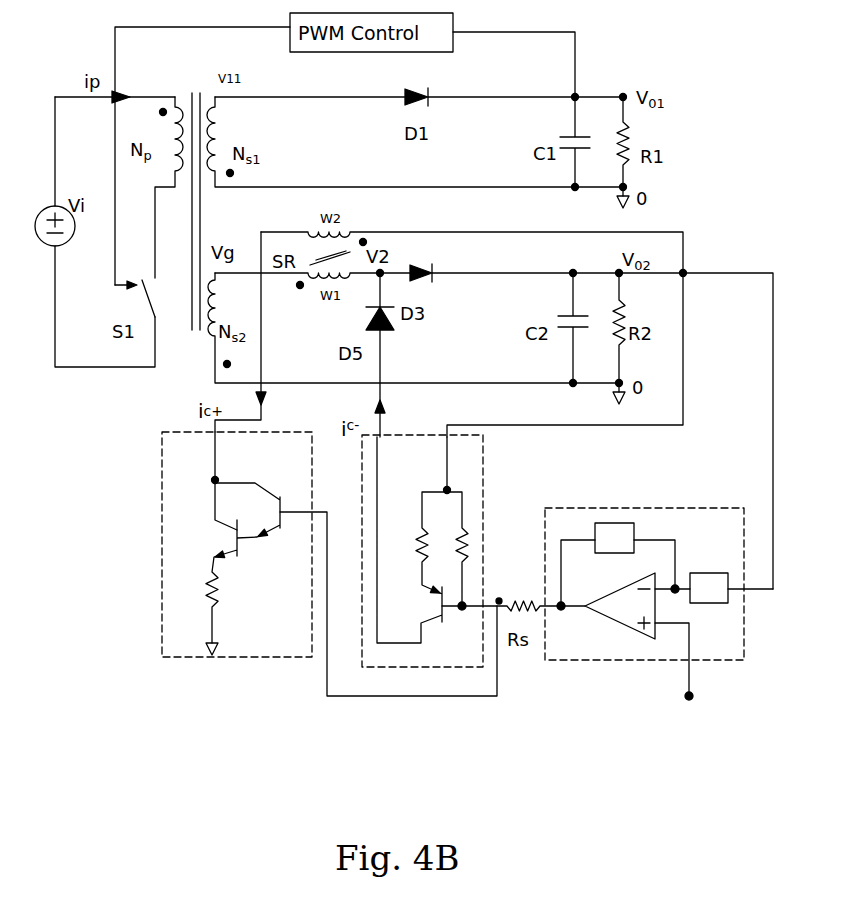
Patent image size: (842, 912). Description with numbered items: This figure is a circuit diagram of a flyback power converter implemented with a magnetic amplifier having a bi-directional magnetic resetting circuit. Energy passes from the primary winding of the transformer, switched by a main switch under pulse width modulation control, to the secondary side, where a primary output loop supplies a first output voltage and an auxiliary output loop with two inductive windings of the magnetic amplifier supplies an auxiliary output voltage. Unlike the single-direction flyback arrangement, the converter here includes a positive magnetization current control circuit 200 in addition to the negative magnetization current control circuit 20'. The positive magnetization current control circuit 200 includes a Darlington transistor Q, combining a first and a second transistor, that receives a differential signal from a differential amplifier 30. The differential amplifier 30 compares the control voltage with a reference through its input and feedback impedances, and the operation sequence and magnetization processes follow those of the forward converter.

The positive magnetization current control circuit 200 is at (152, 502).
The negative magnetization current control circuit 20' is at (452, 551).
The differential amplifier 30 is at (756, 629).